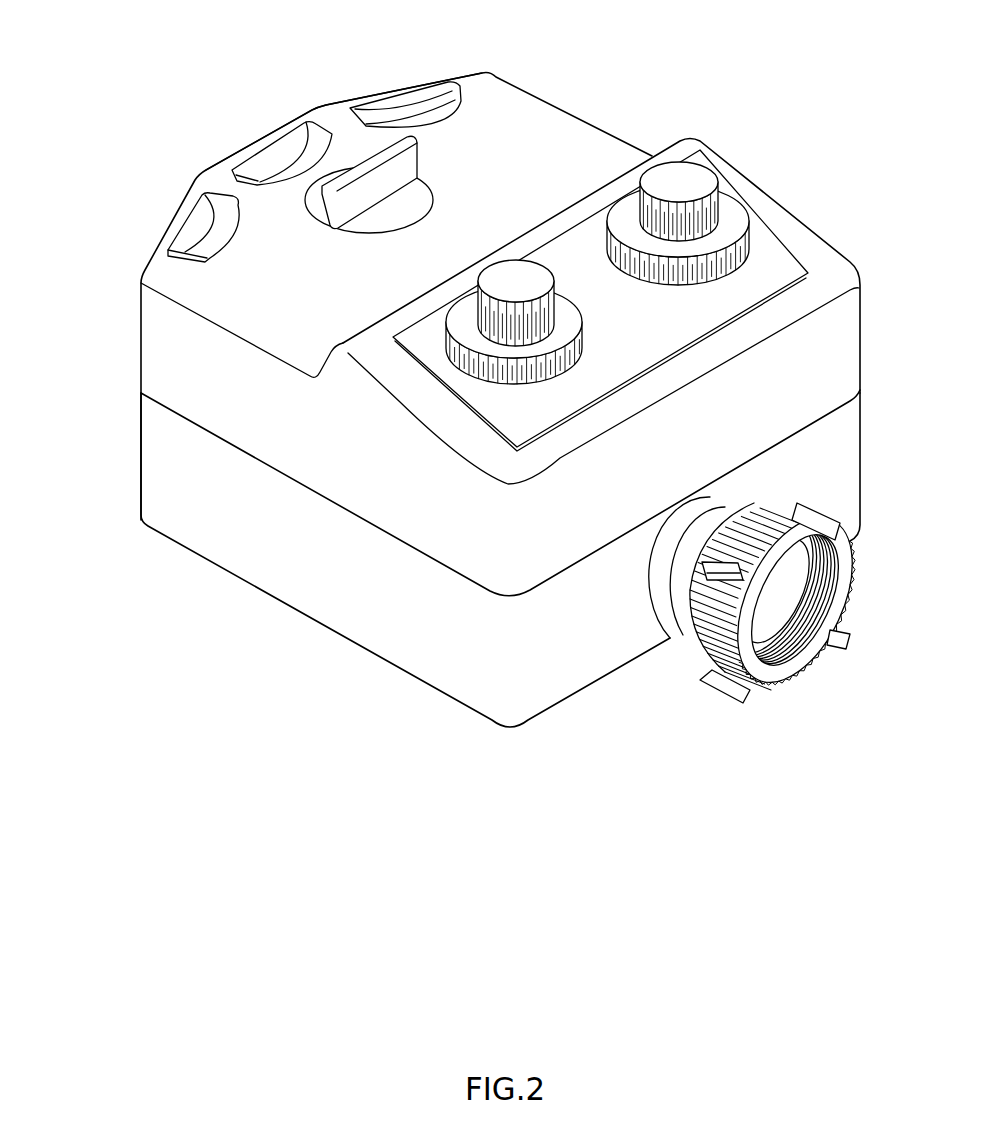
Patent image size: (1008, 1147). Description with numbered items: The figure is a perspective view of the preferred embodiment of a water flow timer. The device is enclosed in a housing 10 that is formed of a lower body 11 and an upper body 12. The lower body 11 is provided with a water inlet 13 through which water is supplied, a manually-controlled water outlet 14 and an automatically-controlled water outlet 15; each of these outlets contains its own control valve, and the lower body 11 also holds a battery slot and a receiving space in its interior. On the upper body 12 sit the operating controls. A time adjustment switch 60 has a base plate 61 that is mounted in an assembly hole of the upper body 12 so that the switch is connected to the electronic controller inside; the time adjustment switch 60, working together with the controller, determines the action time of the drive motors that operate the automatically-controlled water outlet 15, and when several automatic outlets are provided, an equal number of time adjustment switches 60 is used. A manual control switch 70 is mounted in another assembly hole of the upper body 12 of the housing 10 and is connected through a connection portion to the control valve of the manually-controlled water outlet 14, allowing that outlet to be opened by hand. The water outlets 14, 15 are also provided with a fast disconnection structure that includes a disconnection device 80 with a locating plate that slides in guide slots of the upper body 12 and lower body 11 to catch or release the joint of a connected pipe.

The housing 10 is at (450, 400).
The lower body 11 is at (152, 465).
The upper body 12 is at (152, 350).
The water inlet 13 is at (770, 613).
The manually-controlled water outlet 14 is at (249, 127).
The automatically-controlled water outlet 15 is at (395, 67).
The time adjustment switch 60 is at (517, 279).
The base plate 61 is at (772, 258).
The manual control switch 70 is at (365, 170).
The disconnection device 80 is at (192, 218).